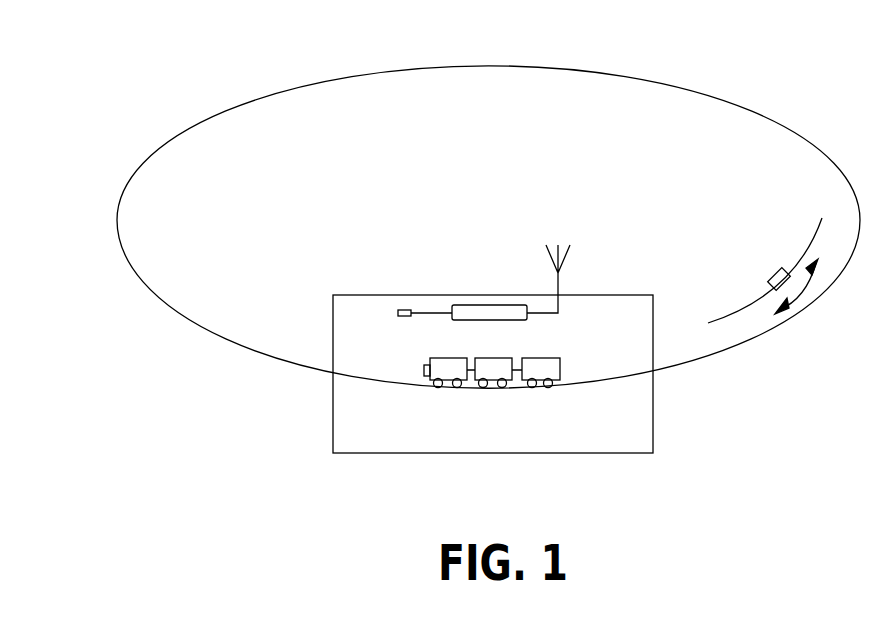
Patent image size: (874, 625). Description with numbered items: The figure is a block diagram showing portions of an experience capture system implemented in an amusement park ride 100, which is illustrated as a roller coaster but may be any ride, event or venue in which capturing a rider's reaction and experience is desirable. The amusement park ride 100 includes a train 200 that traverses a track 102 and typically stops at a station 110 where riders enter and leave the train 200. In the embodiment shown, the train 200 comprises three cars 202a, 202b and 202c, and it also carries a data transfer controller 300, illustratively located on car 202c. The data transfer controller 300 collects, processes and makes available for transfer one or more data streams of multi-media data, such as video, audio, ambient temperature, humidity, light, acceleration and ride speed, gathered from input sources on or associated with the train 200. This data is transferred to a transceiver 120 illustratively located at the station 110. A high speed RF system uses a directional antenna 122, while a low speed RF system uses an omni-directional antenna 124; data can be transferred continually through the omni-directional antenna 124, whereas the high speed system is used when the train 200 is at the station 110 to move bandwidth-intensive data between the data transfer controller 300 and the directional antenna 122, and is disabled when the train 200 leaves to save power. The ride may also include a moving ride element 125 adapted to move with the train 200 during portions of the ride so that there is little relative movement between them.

The amusement park ride 100 is at (137, 60).
The track 102 is at (158, 300).
The station 110 is at (372, 294).
The transceiver 120 is at (503, 321).
The directional antenna 122 is at (403, 317).
The omni-directional antenna 124 is at (560, 273).
The moving ride element 125 is at (772, 273).
The train 200 is at (506, 378).
The car 202a is at (443, 373).
The car 202b is at (495, 371).
The car 202c is at (553, 370).
The data transfer controller 300 is at (424, 371).